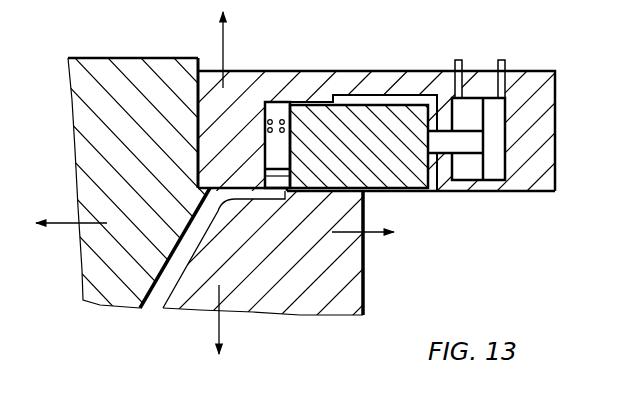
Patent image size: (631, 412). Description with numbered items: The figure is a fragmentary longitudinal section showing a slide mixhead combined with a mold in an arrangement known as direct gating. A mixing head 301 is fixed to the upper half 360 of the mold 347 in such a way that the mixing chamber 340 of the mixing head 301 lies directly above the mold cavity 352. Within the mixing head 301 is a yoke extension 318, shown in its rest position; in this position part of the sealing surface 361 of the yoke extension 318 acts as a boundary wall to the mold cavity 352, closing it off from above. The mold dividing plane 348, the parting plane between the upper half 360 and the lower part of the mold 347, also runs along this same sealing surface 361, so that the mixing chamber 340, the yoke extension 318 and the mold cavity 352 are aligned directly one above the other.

The mixing head 301 is at (401, 70).
The yoke extension 318 is at (340, 128).
The mixing chamber 340 is at (282, 103).
The mold 347 is at (368, 281).
The mold dividing plane 348 is at (314, 195).
The mold cavity 352 is at (252, 191).
The upper half of the mold 360 is at (133, 68).
The sealing surface 361 is at (397, 194).